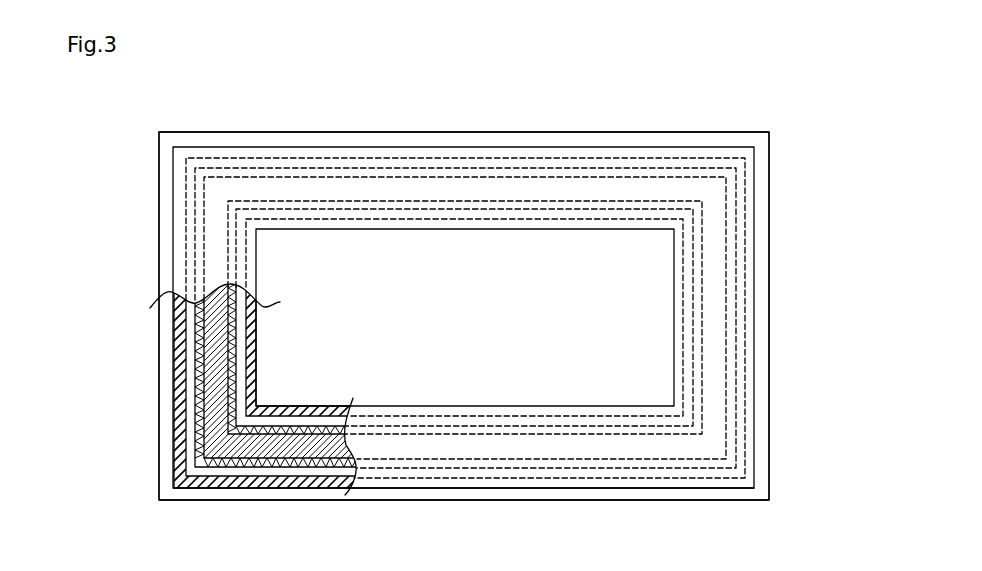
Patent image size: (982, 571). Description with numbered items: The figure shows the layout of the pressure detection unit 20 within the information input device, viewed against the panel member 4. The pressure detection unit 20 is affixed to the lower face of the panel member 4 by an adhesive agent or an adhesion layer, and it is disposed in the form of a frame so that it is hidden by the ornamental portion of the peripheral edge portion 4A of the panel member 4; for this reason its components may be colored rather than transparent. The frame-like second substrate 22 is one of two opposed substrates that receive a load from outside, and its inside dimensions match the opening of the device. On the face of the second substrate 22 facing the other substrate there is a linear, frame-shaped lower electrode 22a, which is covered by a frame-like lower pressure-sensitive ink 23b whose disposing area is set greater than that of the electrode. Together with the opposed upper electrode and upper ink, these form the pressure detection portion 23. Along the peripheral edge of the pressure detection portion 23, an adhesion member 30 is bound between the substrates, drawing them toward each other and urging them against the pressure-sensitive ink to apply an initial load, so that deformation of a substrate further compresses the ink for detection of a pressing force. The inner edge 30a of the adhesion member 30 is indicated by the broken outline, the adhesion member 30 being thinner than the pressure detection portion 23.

The panel member 4 is at (485, 132).
The peripheral edge portion 4A is at (597, 129).
The pressure detection unit 20 is at (166, 421).
The second substrate 22 is at (445, 488).
The lower electrode 22a is at (310, 452).
The pressure detection portion 23 is at (426, 348).
The lower pressure-sensitive ink 23b is at (288, 428).
The adhesion member 30 is at (173, 315).
The inner edge of light shielding layer 30a is at (305, 155).